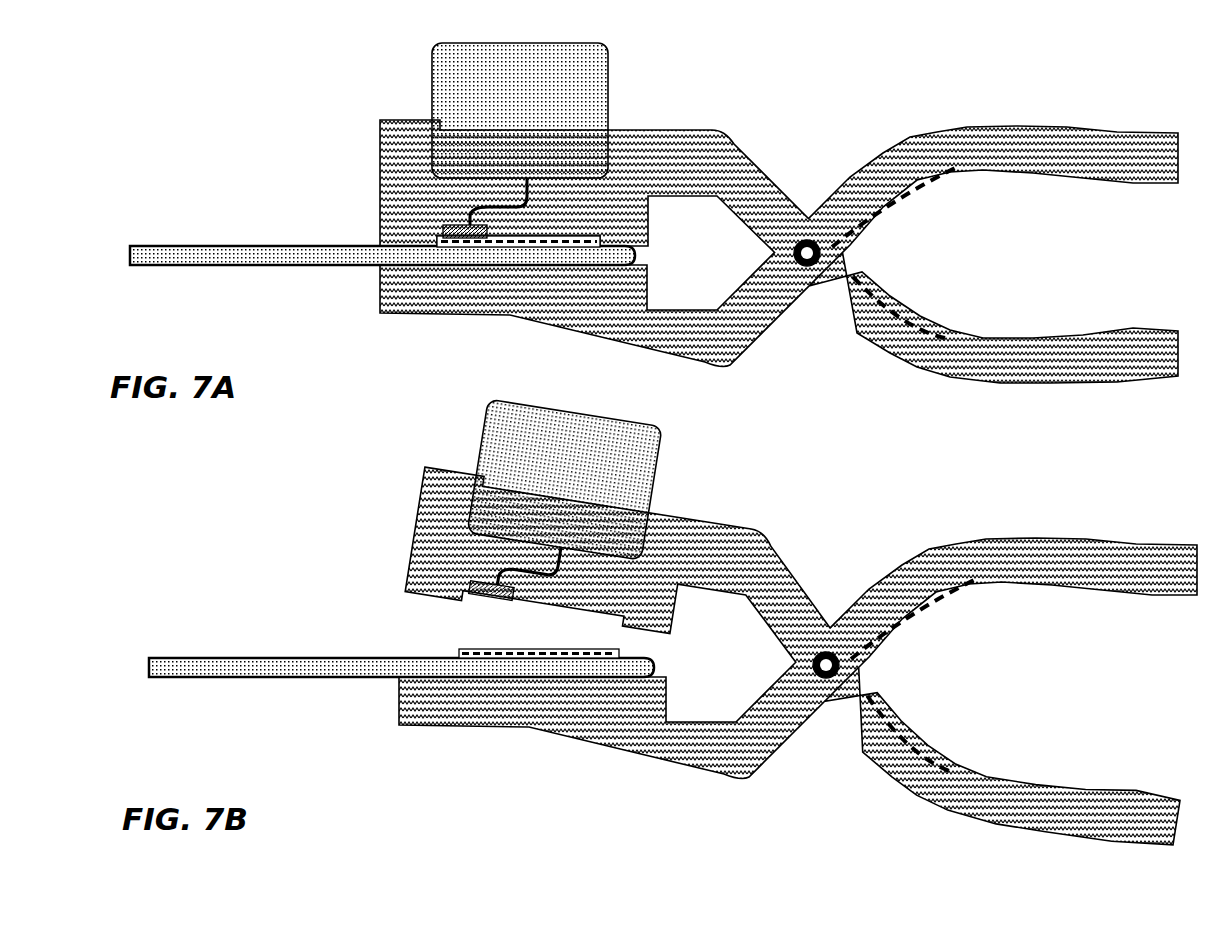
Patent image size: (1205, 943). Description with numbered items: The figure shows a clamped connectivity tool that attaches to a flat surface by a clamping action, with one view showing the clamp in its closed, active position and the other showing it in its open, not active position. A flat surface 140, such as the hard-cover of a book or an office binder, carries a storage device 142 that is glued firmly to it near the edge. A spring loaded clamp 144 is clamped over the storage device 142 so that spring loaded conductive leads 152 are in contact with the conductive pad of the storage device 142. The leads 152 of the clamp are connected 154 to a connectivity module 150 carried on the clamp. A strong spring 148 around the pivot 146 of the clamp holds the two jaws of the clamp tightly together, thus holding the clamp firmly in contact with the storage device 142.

In FIG. 7A, the flat surface 140 is at (243, 268).
In FIG. 7B, the flat surface 140 is at (401, 667).
In FIG. 7A, the storage device 142 is at (432, 312).
In FIG. 7B, the storage device 142 is at (798, 656).
In FIG. 7A, the spring loaded clamp 144 is at (722, 134).
In FIG. 7B, the spring loaded clamp 144 is at (912, 619).
In FIG. 7A, the pivot 146 is at (852, 252).
In FIG. 7B, the pivot 146 is at (826, 665).
In FIG. 7A, the strong spring 148 is at (880, 355).
In FIG. 7B, the strong spring 148 is at (908, 733).
In FIG. 7A, the connectivity module 150 is at (609, 78).
In FIG. 7B, the connectivity module 150 is at (564, 479).
In FIG. 7A, the spring loaded conductive leads 152 is at (447, 226).
In FIG. 7B, the spring loaded conductive leads 152 is at (491, 591).
In FIG. 7A, the connection 154 is at (500, 215).
In FIG. 7B, the connection 154 is at (529, 566).